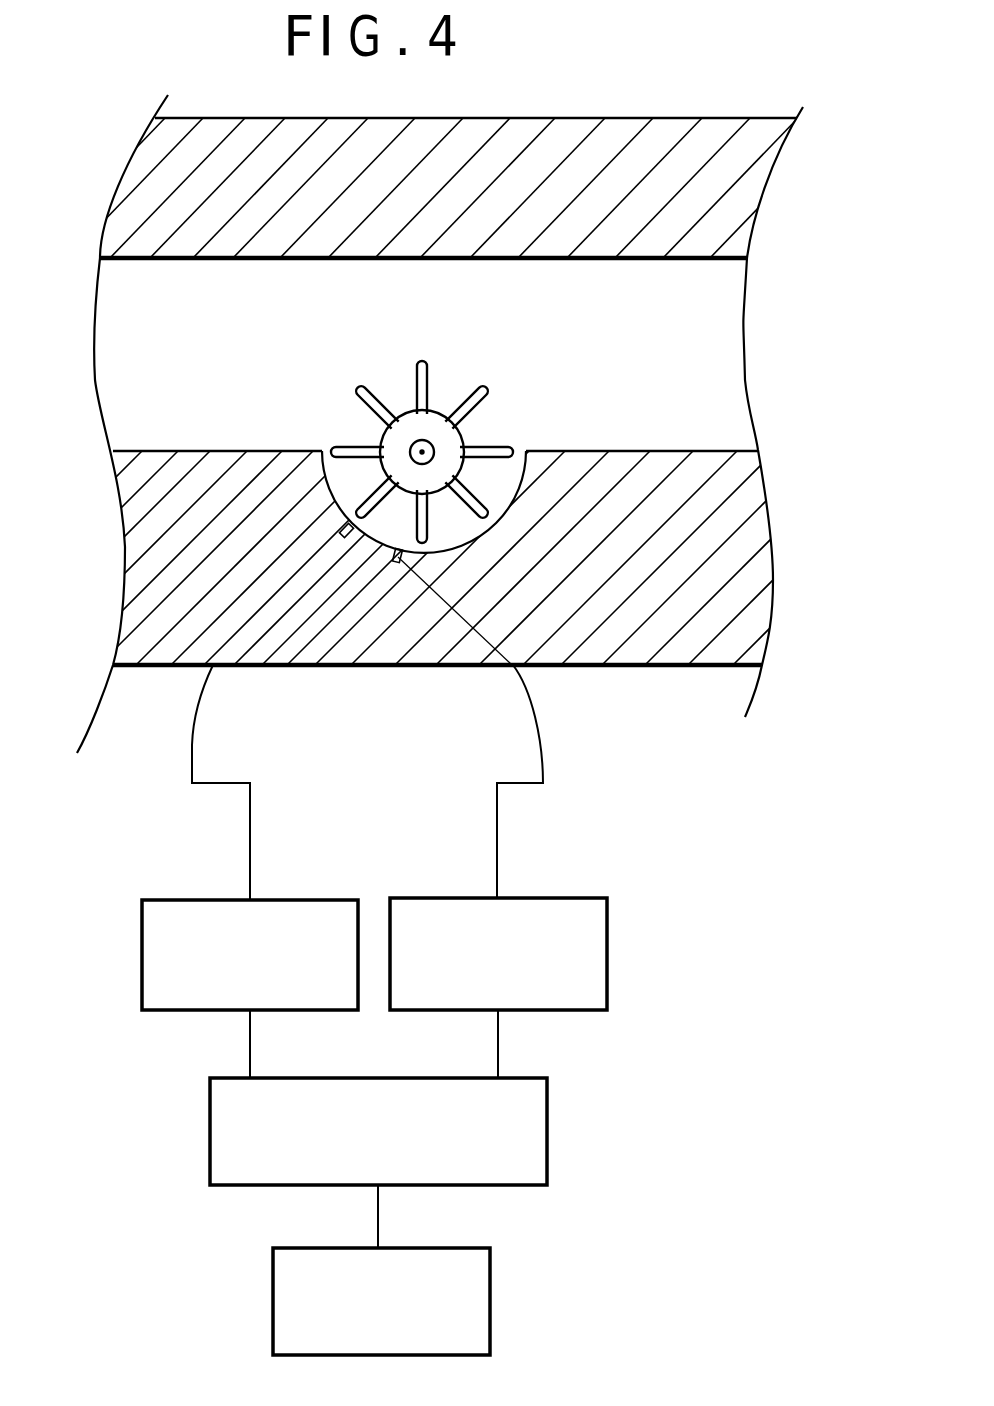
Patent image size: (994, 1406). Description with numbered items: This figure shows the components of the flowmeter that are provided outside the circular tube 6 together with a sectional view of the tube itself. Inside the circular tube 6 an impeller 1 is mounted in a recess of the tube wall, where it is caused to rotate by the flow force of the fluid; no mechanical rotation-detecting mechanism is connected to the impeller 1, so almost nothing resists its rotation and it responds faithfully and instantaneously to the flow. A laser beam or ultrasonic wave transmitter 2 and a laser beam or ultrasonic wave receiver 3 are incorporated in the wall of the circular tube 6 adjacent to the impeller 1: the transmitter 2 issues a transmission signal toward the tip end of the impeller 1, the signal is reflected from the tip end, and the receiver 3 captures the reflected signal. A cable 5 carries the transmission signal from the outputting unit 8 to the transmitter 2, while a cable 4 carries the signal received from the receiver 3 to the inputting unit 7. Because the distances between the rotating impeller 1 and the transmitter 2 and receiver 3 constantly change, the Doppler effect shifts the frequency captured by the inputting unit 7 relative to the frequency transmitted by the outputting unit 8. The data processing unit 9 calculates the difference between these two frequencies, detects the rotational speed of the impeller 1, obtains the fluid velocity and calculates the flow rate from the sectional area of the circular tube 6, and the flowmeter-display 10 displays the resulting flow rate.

The impeller 1 is at (464, 393).
The laser beam or ultrasonic wave transmitter 2 is at (397, 559).
The laser beam or ultrasonic wave receiver 3 is at (350, 533).
The cable 4 is at (190, 753).
The cable 5 is at (543, 757).
The circular tube 6 is at (758, 515).
The inputting unit 7 is at (142, 947).
The outputting unit 8 is at (607, 943).
The data processing unit 9 is at (547, 1133).
The flowmeter-display 10 is at (490, 1293).